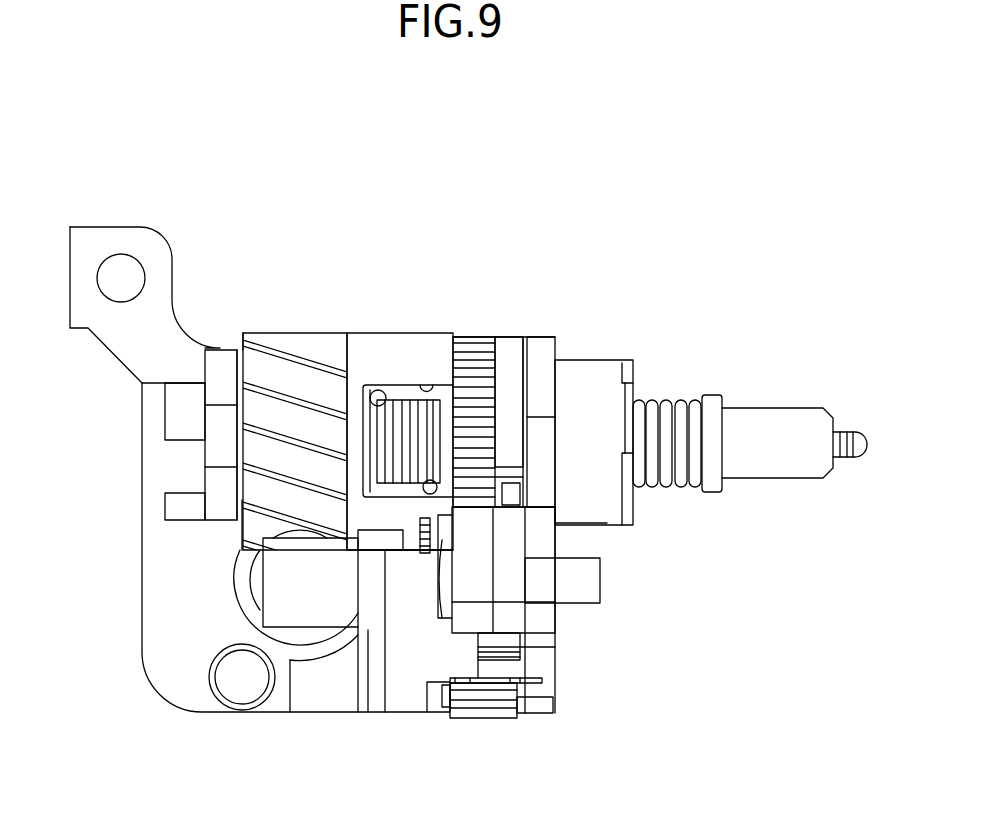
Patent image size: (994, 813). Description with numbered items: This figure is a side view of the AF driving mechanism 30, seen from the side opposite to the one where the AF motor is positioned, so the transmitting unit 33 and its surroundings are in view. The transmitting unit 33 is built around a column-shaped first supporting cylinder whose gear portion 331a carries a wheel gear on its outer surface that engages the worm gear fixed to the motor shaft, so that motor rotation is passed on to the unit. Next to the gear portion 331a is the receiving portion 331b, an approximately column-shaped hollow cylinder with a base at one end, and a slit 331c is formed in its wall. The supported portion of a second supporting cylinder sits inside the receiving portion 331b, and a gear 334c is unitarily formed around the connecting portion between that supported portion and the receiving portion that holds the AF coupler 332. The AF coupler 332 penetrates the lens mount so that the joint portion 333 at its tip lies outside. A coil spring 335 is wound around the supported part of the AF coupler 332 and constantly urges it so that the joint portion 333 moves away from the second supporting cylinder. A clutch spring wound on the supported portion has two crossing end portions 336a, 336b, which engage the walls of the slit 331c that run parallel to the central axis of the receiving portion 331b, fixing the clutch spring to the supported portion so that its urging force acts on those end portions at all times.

The AF driving mechanism 30 is at (622, 165).
The transmitting unit 33 is at (400, 213).
The gear portion 331a is at (297, 348).
The receiving portion 331b is at (368, 345).
The slit 331c is at (428, 387).
The AF coupler 332 is at (802, 408).
The joint portion 333 is at (865, 445).
The gear 334c is at (477, 343).
The coil spring 335 is at (673, 400).
The end portion of clutch spring 336a is at (424, 490).
The end portion of clutch spring 336b is at (378, 390).